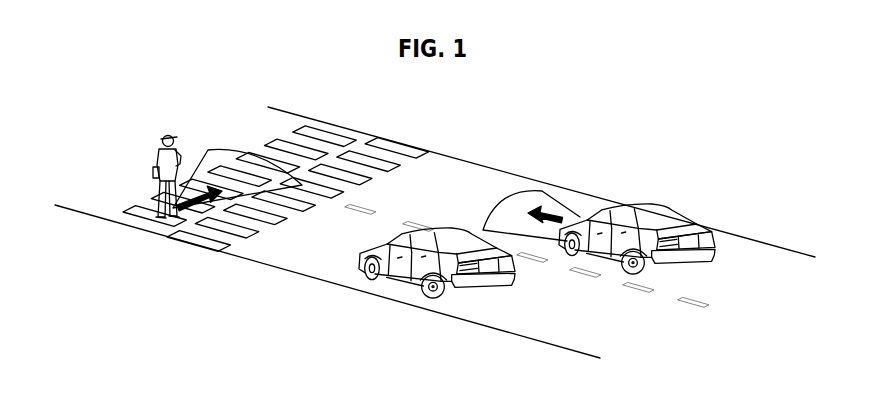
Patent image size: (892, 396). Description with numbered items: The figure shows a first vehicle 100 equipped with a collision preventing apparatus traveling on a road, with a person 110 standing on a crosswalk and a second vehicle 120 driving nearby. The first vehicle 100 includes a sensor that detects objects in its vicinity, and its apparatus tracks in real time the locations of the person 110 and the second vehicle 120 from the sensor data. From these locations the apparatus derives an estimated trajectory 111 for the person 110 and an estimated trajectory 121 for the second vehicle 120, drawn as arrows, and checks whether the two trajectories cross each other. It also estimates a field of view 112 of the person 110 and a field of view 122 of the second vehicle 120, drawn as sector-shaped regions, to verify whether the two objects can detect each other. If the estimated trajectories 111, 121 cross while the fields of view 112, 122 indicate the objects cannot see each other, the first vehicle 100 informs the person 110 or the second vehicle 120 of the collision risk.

The first vehicle 100 is at (394, 262).
The person 110 is at (162, 137).
The estimated trajectory 111 is at (200, 218).
The field of view 112 is at (197, 158).
The second vehicle 120 is at (668, 217).
The estimated trajectory 121 is at (562, 217).
The field of view 122 is at (564, 190).